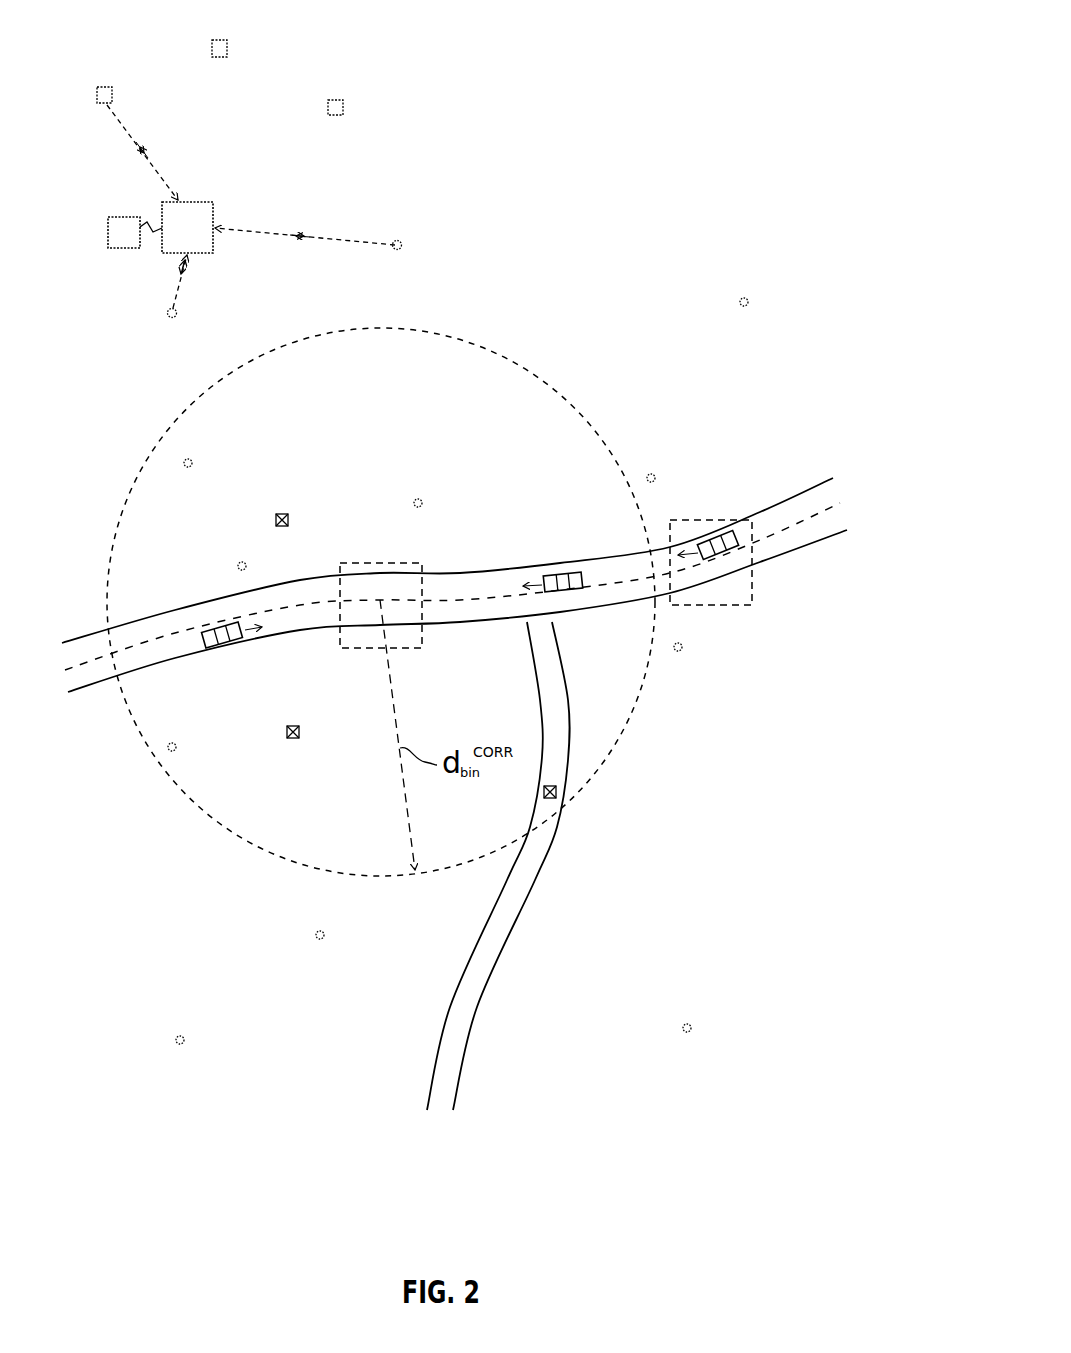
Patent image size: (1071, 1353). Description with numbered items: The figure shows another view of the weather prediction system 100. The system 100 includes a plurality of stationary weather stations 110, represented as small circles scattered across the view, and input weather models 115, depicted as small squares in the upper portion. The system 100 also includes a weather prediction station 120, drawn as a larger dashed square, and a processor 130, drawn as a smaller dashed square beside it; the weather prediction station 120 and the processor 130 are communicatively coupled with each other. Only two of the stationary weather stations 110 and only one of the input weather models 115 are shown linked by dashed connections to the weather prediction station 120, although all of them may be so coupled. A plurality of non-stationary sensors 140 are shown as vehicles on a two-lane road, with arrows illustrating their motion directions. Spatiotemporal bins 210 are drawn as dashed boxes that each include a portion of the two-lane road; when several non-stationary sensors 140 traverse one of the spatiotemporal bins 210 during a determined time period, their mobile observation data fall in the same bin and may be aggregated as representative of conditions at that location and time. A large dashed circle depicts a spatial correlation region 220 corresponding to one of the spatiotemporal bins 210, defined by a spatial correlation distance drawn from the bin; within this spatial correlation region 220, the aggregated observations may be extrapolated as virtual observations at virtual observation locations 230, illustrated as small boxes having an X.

The system 100 is at (464, 122).
The stationary weather stations 110 is at (402, 243).
The input weather models 115 is at (212, 42).
The weather prediction station 120 is at (205, 202).
The processor 130 is at (125, 250).
The non-stationary sensors 140 is at (223, 642).
The spatiotemporal bins 210 is at (423, 638).
The spatial correlation region 220 is at (525, 370).
The virtual observation locations 230 is at (285, 515).